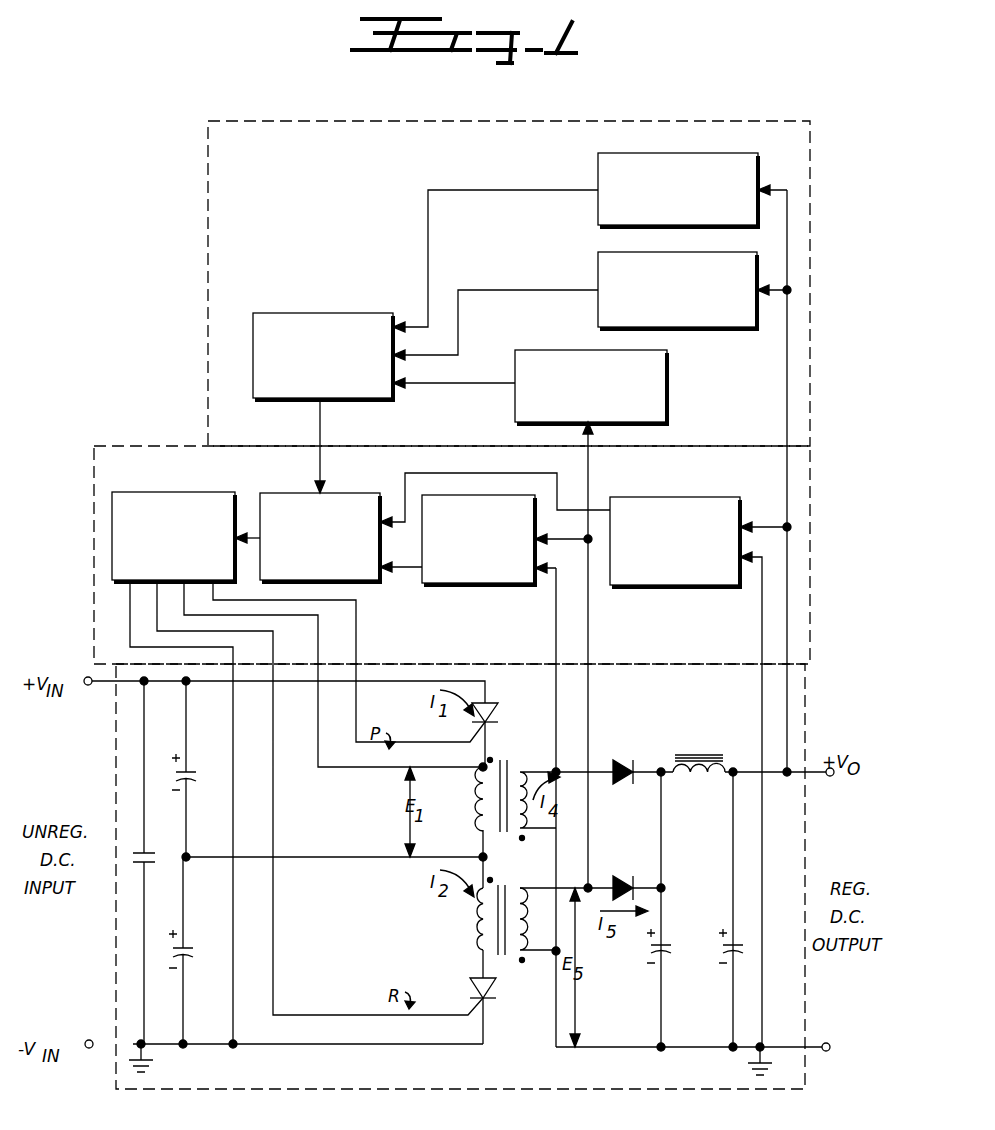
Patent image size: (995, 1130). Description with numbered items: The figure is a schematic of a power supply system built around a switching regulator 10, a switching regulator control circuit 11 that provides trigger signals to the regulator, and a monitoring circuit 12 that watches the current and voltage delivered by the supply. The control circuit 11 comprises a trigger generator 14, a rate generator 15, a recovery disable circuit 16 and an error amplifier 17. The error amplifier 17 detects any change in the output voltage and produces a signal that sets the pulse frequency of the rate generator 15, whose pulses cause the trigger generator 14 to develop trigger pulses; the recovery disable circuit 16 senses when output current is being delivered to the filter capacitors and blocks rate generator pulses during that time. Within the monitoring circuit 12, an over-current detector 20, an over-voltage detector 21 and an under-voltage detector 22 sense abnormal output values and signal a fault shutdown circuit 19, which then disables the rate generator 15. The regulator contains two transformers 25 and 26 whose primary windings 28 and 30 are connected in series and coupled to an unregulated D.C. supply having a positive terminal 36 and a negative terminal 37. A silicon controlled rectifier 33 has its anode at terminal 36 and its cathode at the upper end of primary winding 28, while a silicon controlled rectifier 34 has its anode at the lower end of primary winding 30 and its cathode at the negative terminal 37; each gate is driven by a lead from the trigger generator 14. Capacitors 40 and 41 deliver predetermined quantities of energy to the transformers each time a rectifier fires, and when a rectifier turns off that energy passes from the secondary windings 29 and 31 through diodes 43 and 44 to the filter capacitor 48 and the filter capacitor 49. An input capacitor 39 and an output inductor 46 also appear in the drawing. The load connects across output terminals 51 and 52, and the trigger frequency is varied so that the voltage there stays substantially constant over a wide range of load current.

The switching regulator 10 is at (806, 690).
The switching regulator control circuit 11 is at (812, 462).
The monitoring circuit 12 is at (812, 128).
The trigger generator 14 is at (196, 492).
The rate generator 15 is at (345, 493).
The recovery disable circuit 16 is at (500, 495).
The error amplifier 17 is at (710, 497).
The fault shutdown circuit 19 is at (353, 313).
The over-current detector 20 is at (638, 350).
The over-voltage detector 21 is at (722, 153).
The under-voltage detector 22 is at (720, 252).
The transformer 25 is at (522, 755).
The transformer 26 is at (524, 878).
The primary winding 28 is at (475, 805).
The secondary winding 29 is at (528, 822).
The primary winding 30 is at (475, 921).
The secondary winding 31 is at (538, 920).
The silicon controlled rectifier 33 is at (490, 697).
The silicon controlled rectifier 34 is at (468, 984).
The positive output terminal 36 is at (86, 676).
The negative output terminal 37 is at (86, 1048).
The input capacitor 39 is at (148, 850).
The capacitor 40 is at (190, 770).
The capacitor 41 is at (187, 946).
The diode 43 is at (626, 758).
The diode 44 is at (636, 861).
The filter inductor 46 is at (688, 782).
The filter capacitor 48 is at (665, 943).
The filter capacitor 49 is at (737, 943).
The output terminal 51 is at (833, 776).
The output terminal 52 is at (828, 1042).